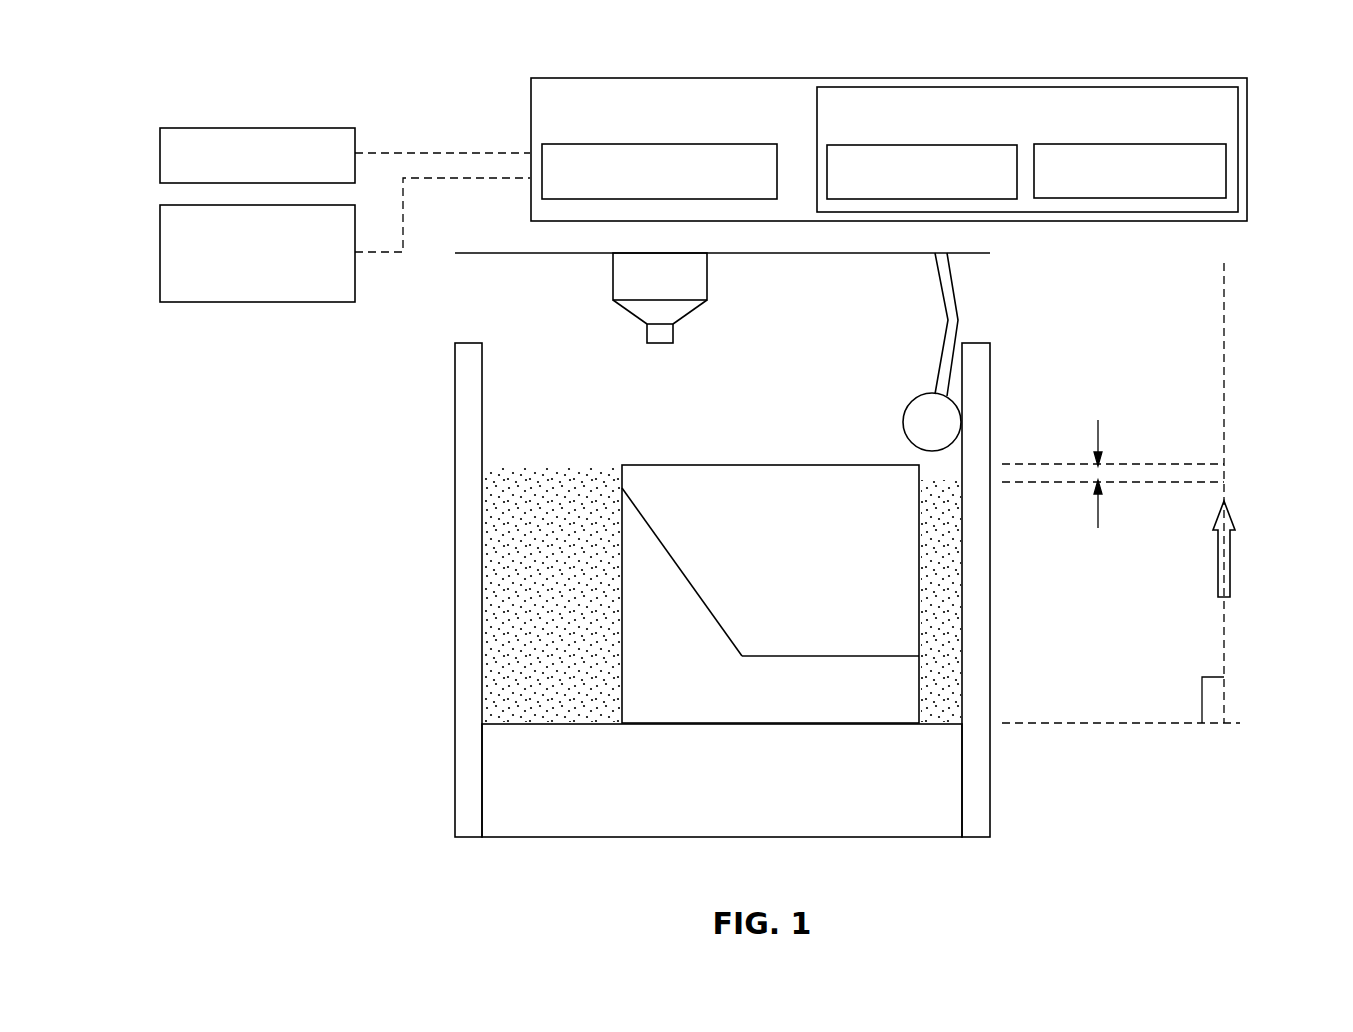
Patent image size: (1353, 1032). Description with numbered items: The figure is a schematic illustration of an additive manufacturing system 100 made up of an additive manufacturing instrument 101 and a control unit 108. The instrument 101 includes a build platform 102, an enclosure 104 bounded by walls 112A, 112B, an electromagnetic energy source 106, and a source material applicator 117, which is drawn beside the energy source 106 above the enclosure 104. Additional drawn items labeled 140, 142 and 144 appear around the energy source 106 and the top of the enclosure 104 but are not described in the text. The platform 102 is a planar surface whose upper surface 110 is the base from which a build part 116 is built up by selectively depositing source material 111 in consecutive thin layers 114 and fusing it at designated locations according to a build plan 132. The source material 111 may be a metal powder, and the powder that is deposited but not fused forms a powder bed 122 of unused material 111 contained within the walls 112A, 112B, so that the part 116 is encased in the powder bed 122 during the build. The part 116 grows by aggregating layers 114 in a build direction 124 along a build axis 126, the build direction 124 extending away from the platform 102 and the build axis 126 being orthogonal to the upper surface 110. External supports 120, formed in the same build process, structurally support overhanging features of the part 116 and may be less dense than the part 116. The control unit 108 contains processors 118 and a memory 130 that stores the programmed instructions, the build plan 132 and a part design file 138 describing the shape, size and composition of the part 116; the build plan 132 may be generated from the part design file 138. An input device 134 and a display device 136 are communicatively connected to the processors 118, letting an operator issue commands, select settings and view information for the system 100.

The additive manufacturing system 100 is at (447, 107).
The additive manufacturing instrument 101 is at (392, 497).
The build platform 102 is at (520, 825).
The enclosure 104 is at (721, 551).
The electromagnetic energy source 106 is at (694, 328).
The control unit 108 is at (762, 78).
The upper surface 110 is at (671, 575).
The source material 111 is at (523, 487).
The wall 112A is at (465, 398).
The wall 112B is at (977, 383).
The layer 114 is at (1102, 437).
The build part 116 is at (890, 552).
The source material applicator 117 is at (960, 335).
The processors 118 is at (562, 144).
The external supports 120 is at (853, 708).
The powder bed 122 is at (522, 615).
The build direction 124 is at (1230, 557).
The build axis 126 is at (1224, 433).
The memory 130 is at (932, 86).
The build plan 132 is at (988, 144).
The input device 134 is at (258, 128).
The display device 136 is at (255, 302).
The part design file 138 is at (1130, 144).
The printhead body 140 is at (693, 272).
The nozzle 142 is at (660, 337).
The rail 144 is at (557, 254).